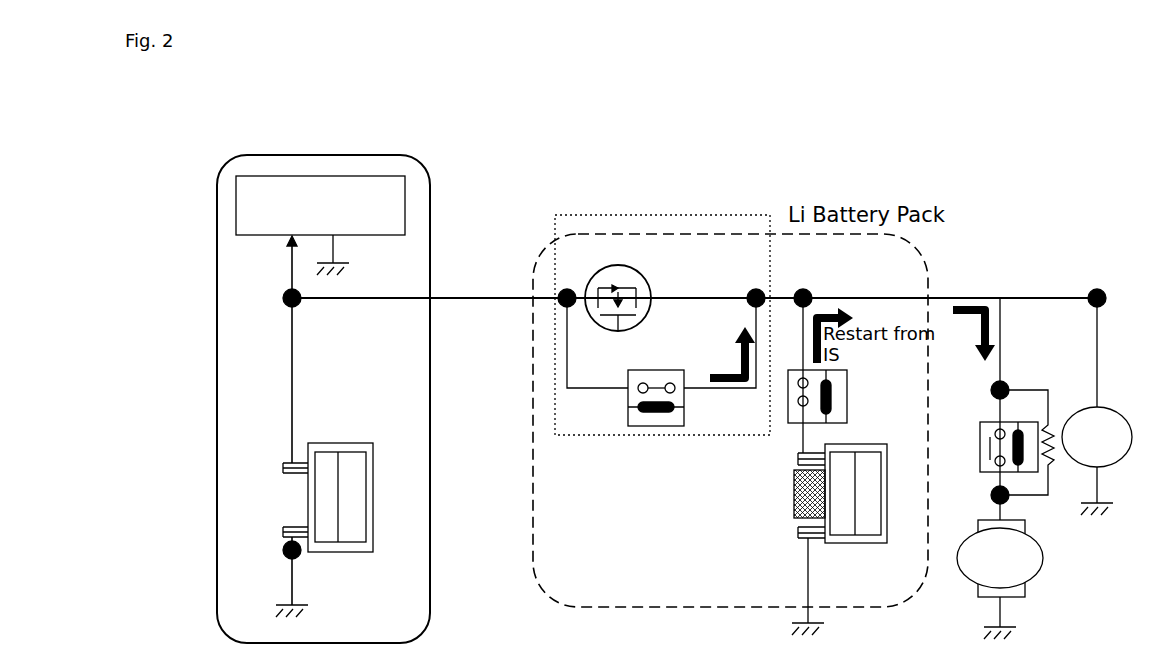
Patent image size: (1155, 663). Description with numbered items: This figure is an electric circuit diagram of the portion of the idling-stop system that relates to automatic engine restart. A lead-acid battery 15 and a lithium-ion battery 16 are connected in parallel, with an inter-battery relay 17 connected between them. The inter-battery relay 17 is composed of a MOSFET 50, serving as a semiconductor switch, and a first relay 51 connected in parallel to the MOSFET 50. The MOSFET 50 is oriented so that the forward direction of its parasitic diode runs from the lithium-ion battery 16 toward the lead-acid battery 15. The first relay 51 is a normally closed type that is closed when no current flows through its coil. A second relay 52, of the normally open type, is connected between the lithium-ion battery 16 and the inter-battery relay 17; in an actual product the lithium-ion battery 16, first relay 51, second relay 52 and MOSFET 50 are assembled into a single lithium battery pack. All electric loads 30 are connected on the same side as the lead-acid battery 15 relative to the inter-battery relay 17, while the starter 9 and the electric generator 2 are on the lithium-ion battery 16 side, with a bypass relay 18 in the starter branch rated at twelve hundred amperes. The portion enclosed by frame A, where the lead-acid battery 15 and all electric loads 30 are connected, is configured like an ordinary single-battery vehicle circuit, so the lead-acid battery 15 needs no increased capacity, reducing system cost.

The frame A is at (432, 185).
The all electric loads 30 is at (330, 176).
The lead-acid battery 15 is at (360, 445).
The inter-battery relay 17 is at (615, 215).
The MOSFET 50 is at (630, 268).
The first relay 51 is at (640, 420).
The second relay 52 is at (847, 412).
The lithium-ion battery 16 is at (794, 510).
The bypass relay 18 is at (985, 420).
The starter 9 is at (1035, 572).
The electric generator 2 is at (1122, 412).